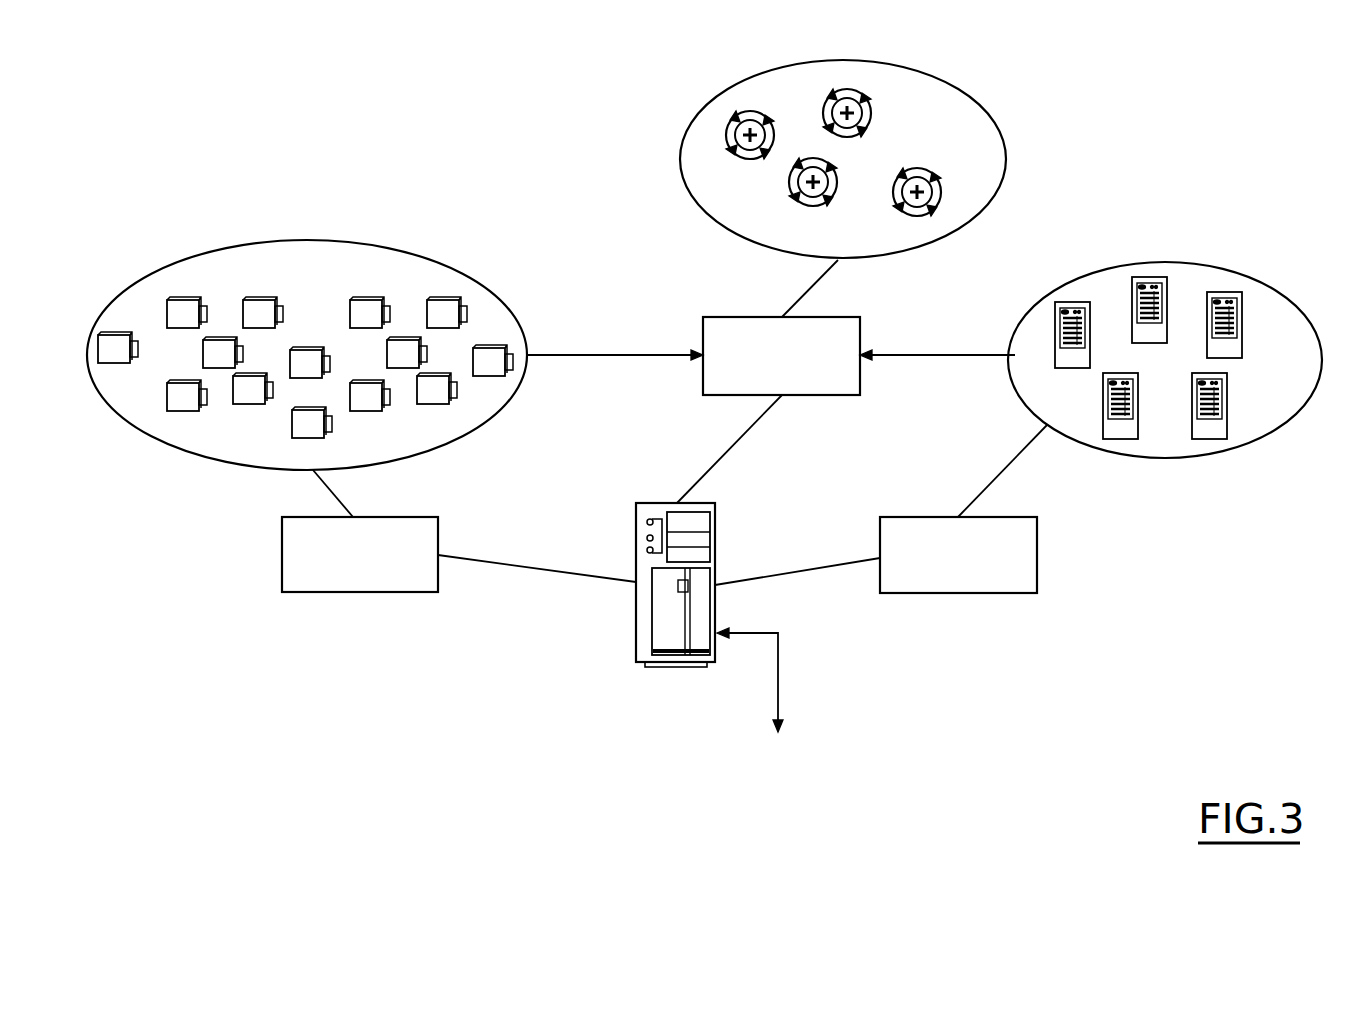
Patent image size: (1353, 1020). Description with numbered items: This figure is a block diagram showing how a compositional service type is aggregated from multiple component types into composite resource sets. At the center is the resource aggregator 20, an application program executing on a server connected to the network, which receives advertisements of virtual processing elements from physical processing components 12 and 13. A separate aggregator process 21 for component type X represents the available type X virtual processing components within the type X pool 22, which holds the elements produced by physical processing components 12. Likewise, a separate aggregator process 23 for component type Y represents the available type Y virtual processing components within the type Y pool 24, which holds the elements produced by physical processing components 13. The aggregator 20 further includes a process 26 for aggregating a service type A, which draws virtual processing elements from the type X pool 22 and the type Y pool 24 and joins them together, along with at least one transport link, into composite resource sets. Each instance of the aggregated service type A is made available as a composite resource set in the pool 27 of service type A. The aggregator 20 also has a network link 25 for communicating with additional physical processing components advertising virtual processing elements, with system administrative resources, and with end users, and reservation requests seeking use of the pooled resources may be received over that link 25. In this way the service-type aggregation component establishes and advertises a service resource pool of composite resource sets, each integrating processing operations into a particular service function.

The physical processing component 12 is at (262, 297).
The physical processing component 13 is at (1229, 400).
The resource aggregator 20 is at (717, 520).
The aggregator process for component type X 21 is at (430, 515).
The type X pool 22 is at (307, 341).
The aggregator process for component type Y 23 is at (1038, 542).
The type Y pool 24 is at (1165, 330).
The network link 25 is at (780, 668).
The process for aggregating service type A 26 is at (860, 325).
The pool of service type A 27 is at (693, 120).